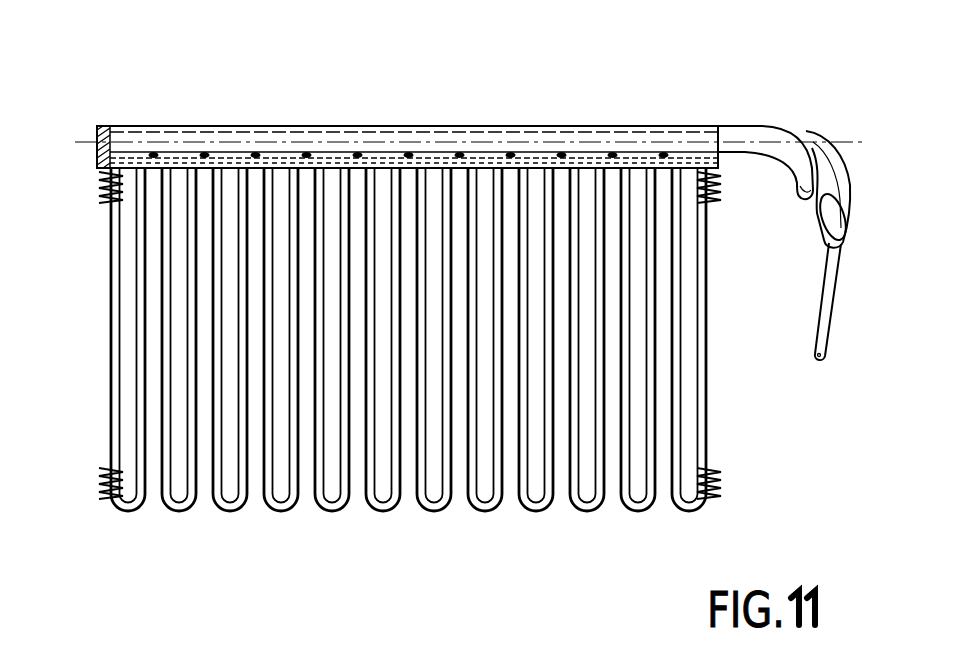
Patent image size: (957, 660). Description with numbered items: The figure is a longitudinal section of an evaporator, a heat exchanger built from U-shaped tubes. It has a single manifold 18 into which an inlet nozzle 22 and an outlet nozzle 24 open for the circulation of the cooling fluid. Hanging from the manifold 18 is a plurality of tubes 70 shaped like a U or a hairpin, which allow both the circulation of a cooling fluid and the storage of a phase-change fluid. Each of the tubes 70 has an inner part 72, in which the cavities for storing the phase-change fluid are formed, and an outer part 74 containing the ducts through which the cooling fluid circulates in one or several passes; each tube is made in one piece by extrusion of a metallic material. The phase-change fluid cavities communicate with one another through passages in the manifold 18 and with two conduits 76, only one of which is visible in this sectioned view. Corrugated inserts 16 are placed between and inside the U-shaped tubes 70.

The manifold 18 is at (251, 118).
The inlet nozzle 22 is at (761, 126).
The outlet nozzle 24 is at (812, 140).
The conduit 76 is at (850, 174).
The inner part 72 is at (121, 313).
The outer part 74 is at (110, 385).
The corrugated inserts 16 is at (114, 507).
The tubes 70 is at (378, 382).